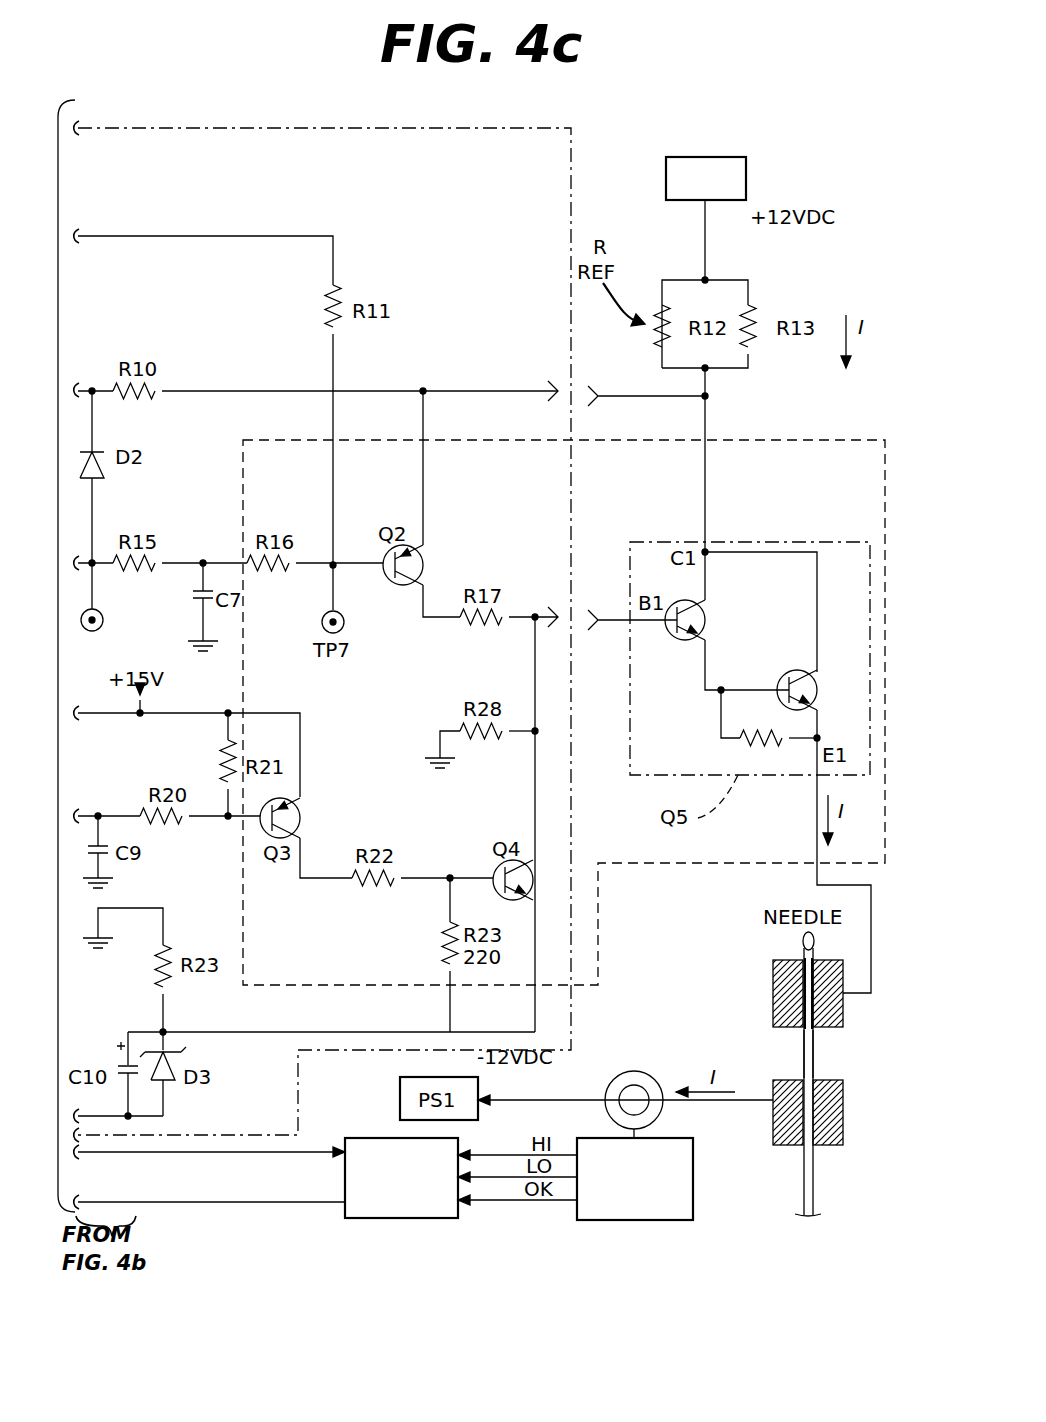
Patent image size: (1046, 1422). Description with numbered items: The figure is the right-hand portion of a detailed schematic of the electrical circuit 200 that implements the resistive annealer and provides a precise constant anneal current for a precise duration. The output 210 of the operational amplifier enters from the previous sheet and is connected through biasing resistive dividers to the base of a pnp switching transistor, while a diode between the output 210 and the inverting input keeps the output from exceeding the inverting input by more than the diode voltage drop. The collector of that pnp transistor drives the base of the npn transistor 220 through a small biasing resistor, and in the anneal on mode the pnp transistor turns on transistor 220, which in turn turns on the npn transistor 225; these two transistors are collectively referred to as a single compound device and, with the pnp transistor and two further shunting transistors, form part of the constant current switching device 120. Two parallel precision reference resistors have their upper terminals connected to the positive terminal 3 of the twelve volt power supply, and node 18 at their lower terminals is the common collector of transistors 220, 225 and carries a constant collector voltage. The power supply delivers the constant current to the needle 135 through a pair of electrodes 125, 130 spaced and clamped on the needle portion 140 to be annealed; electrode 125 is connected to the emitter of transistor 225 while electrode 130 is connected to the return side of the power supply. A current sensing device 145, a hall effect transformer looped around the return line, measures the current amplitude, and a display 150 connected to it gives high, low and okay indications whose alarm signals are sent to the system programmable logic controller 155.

The positive terminal 3 is at (705, 238).
The node 18 is at (705, 398).
The constant current switching device 120 is at (722, 866).
The electrode 125 is at (775, 976).
The electrode 130 is at (835, 1080).
The needle 135 is at (815, 1192).
The needle portion 140 is at (776, 1054).
The current sensing device 145 is at (630, 1071).
The display 150 is at (693, 1186).
The system programmable logic controller 155 is at (368, 1146).
The electrical circuit 200 is at (318, 1220).
The output of the op amp A1-1 210 is at (102, 566).
The npn transistor 220 is at (683, 642).
The npn transistor 225 is at (793, 670).